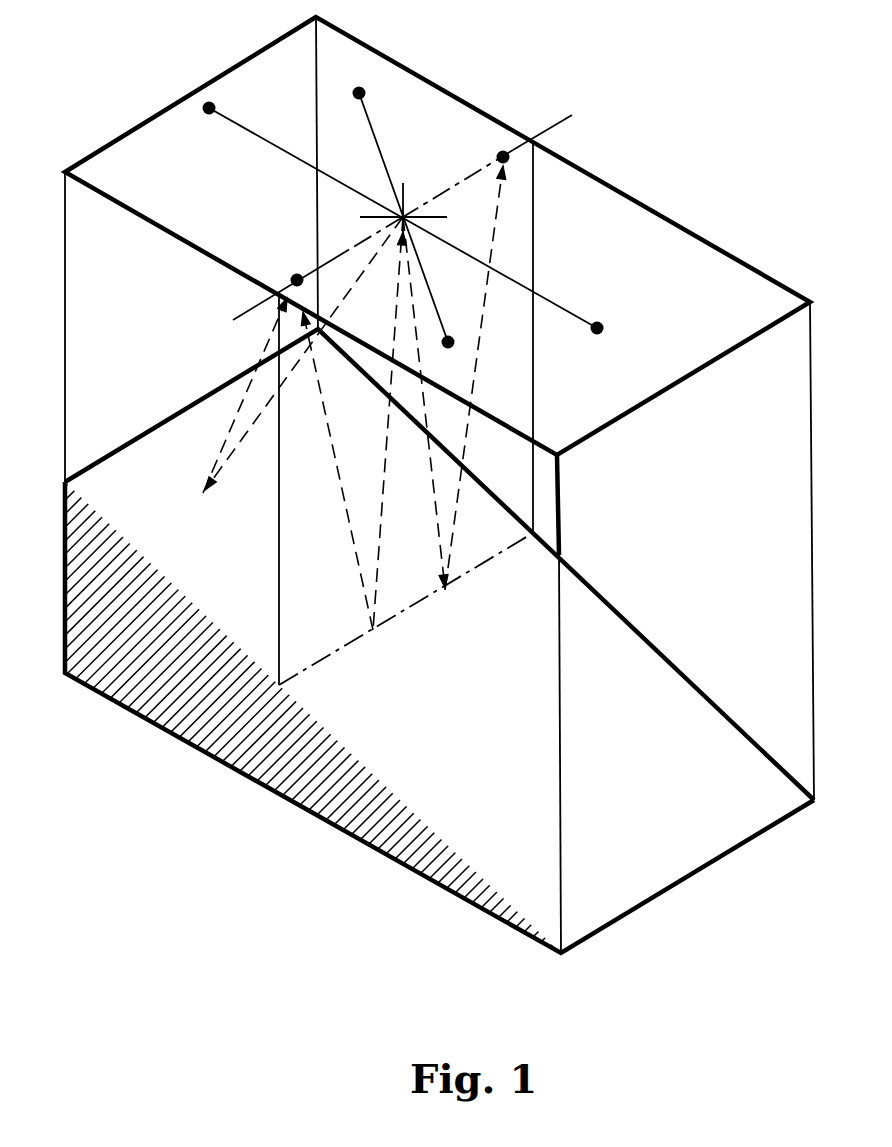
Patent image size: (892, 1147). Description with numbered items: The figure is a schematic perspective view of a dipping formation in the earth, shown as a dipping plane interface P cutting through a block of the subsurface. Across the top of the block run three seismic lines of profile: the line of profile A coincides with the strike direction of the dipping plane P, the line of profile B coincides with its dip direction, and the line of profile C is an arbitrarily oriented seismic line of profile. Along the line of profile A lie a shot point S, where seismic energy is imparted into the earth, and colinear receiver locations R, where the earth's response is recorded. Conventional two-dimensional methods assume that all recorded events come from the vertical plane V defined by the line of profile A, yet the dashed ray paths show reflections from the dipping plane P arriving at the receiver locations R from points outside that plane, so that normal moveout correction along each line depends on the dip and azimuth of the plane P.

The seismic line of profile A is at (551, 122).
The line of profile B is at (250, 133).
The line of profile C is at (373, 123).
The shot point S is at (412, 203).
The receiver location R is at (506, 150).
The vertical plane V is at (280, 610).
The dipping plane interface P is at (157, 608).